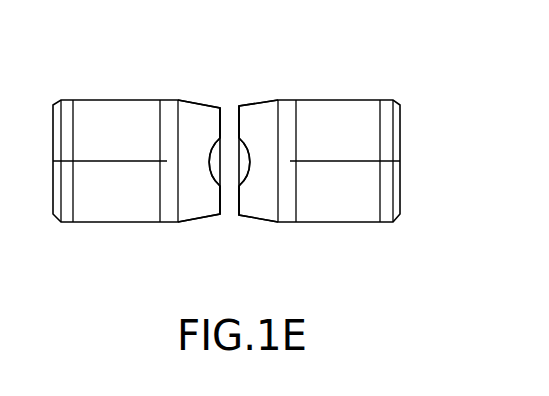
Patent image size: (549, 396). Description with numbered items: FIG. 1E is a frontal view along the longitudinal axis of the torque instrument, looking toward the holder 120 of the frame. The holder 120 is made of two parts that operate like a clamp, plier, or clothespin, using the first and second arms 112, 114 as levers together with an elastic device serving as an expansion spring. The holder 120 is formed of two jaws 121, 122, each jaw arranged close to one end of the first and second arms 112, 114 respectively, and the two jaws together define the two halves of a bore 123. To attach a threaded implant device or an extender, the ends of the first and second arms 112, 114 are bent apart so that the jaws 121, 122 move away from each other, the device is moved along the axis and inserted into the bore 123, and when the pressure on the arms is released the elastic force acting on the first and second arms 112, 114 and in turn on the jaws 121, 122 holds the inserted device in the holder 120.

The first arm 112 is at (90, 93).
The second arm 114 is at (373, 97).
The holder 120 is at (231, 105).
The first jaw 121 is at (193, 207).
The second jaw 122 is at (257, 205).
The bore 123 is at (233, 158).